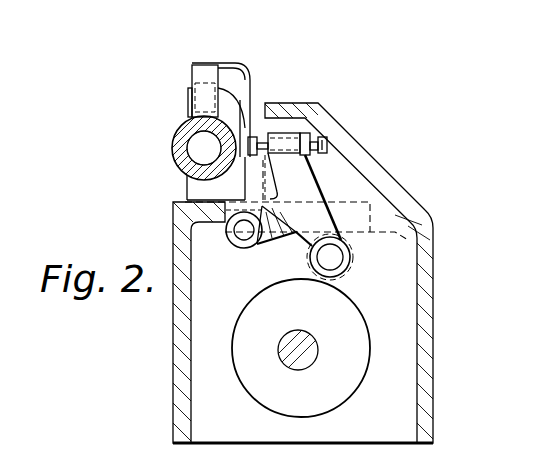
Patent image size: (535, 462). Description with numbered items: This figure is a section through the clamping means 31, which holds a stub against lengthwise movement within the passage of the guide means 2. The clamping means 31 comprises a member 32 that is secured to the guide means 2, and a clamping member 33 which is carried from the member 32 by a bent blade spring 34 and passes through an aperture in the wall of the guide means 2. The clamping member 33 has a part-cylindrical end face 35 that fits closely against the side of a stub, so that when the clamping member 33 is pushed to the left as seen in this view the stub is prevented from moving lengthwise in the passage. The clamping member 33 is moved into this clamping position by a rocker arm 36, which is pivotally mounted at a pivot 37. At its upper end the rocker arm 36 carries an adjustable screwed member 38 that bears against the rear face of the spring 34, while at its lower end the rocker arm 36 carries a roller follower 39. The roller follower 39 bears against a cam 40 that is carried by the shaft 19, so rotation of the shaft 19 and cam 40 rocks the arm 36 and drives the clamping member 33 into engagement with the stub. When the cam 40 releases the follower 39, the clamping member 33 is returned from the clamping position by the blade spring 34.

The guide means 2 is at (173, 147).
The shaft 19 is at (300, 330).
The clamping means 31 is at (258, 85).
The member 32 is at (205, 78).
The clamping member 33 is at (246, 158).
The bent blade spring 34 is at (236, 66).
The part-cylindrical end face 35 is at (188, 165).
The rocker arm 36 is at (317, 195).
The pivot 37 is at (247, 235).
The adjustable screwed member 38 is at (293, 104).
The roller follower 39 is at (350, 253).
The cam 40 is at (343, 310).